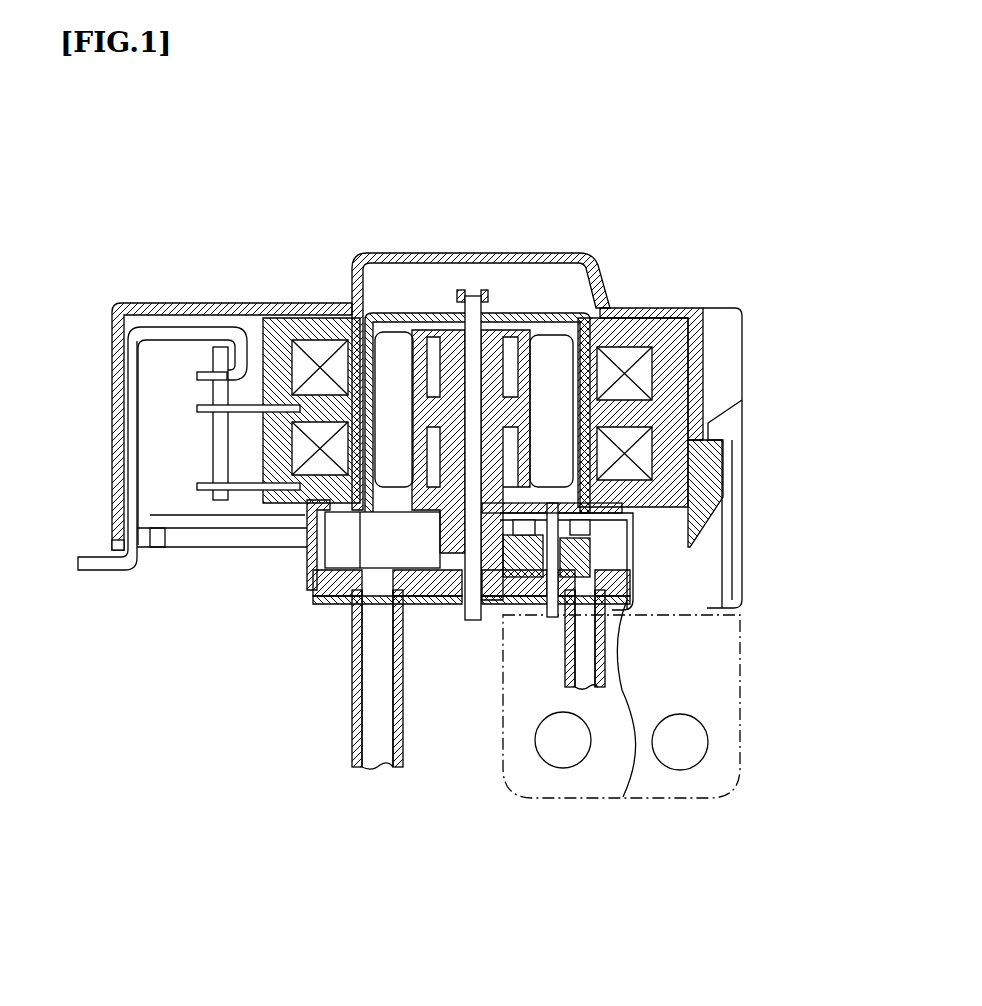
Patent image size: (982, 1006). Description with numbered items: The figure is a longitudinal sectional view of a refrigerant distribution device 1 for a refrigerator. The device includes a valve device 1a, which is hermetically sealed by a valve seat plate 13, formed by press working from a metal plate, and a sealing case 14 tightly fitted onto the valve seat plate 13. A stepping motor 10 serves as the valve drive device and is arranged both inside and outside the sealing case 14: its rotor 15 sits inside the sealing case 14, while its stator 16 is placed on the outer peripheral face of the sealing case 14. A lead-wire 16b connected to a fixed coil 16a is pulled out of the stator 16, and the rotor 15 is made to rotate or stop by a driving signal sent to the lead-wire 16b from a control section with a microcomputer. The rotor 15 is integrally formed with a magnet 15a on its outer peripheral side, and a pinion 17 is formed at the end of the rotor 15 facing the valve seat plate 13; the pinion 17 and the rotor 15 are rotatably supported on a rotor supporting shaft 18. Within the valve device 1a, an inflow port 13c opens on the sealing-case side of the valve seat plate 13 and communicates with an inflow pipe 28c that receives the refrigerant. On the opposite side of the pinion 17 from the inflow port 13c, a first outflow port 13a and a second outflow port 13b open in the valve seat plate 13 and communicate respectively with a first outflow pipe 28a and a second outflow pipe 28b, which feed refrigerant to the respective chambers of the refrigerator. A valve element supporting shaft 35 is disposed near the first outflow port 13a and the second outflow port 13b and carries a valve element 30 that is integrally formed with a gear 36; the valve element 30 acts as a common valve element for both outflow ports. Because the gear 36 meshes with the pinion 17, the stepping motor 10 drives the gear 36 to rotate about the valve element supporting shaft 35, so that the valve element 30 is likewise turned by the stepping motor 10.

The refrigerant distribution device 1 is at (170, 262).
The valve device 1a is at (412, 556).
The stepping motor 10 is at (384, 322).
The valve seat plate 13 is at (157, 540).
The first outflow port 13a is at (718, 603).
The second outflow port 13b is at (680, 742).
The inflow port 13c is at (370, 572).
The sealing case 14 is at (540, 335).
The rotor 15 is at (512, 403).
The magnet 15a is at (626, 360).
The stator 16 is at (690, 308).
The fixed coil 16a is at (590, 335).
The lead-wire 16b is at (102, 563).
The pinion 17 is at (440, 550).
The rotor supporting shaft 18 is at (478, 343).
The first outflow pipe 28a is at (609, 672).
The second outflow pipe 28b is at (600, 638).
The inflow pipe 28c is at (350, 722).
The valve element 30 is at (596, 568).
The valve element supporting shaft 35 is at (633, 522).
The gear 36 is at (605, 540).